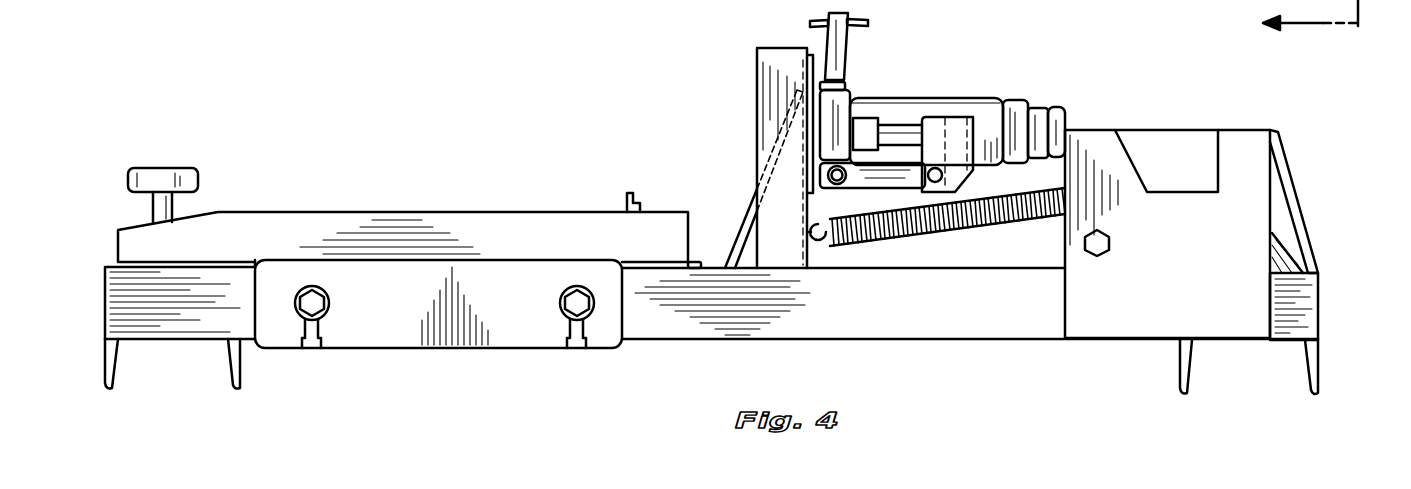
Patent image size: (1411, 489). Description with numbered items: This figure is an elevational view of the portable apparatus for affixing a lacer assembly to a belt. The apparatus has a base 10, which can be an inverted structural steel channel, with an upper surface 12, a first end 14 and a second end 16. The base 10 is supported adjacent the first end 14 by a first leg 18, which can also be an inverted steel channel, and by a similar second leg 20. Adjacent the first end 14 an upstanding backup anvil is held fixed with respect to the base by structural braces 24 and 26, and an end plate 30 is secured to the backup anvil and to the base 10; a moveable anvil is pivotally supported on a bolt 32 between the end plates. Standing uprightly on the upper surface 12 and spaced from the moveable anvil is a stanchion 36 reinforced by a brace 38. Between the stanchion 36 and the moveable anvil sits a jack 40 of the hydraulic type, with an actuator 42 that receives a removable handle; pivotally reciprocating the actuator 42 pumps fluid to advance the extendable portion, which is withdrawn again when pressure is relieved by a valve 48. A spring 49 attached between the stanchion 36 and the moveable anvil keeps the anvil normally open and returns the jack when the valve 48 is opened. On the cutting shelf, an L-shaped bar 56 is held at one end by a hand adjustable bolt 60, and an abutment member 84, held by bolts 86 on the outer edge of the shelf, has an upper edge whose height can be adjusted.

The base 10 is at (1322, 320).
The upper surface 12 is at (898, 270).
The first end 14 is at (1320, 287).
The second end 16 is at (105, 302).
The first leg 18 is at (1188, 356).
The second leg 20 is at (110, 360).
The structural brace 24 is at (1282, 260).
The structural brace 26 is at (1285, 172).
The end plate 30 is at (1248, 145).
The bolt 32 is at (1098, 257).
The stanchion 36 is at (757, 88).
The brace 38 is at (745, 213).
The jack 40 is at (907, 108).
The actuator 42 is at (958, 125).
The valve 48 is at (837, 43).
The spring 49 is at (1003, 222).
The bar 56 is at (525, 223).
The hand adjustable bolt 60 is at (173, 176).
The abutment member 84 is at (473, 346).
The bolts 86 is at (318, 306).